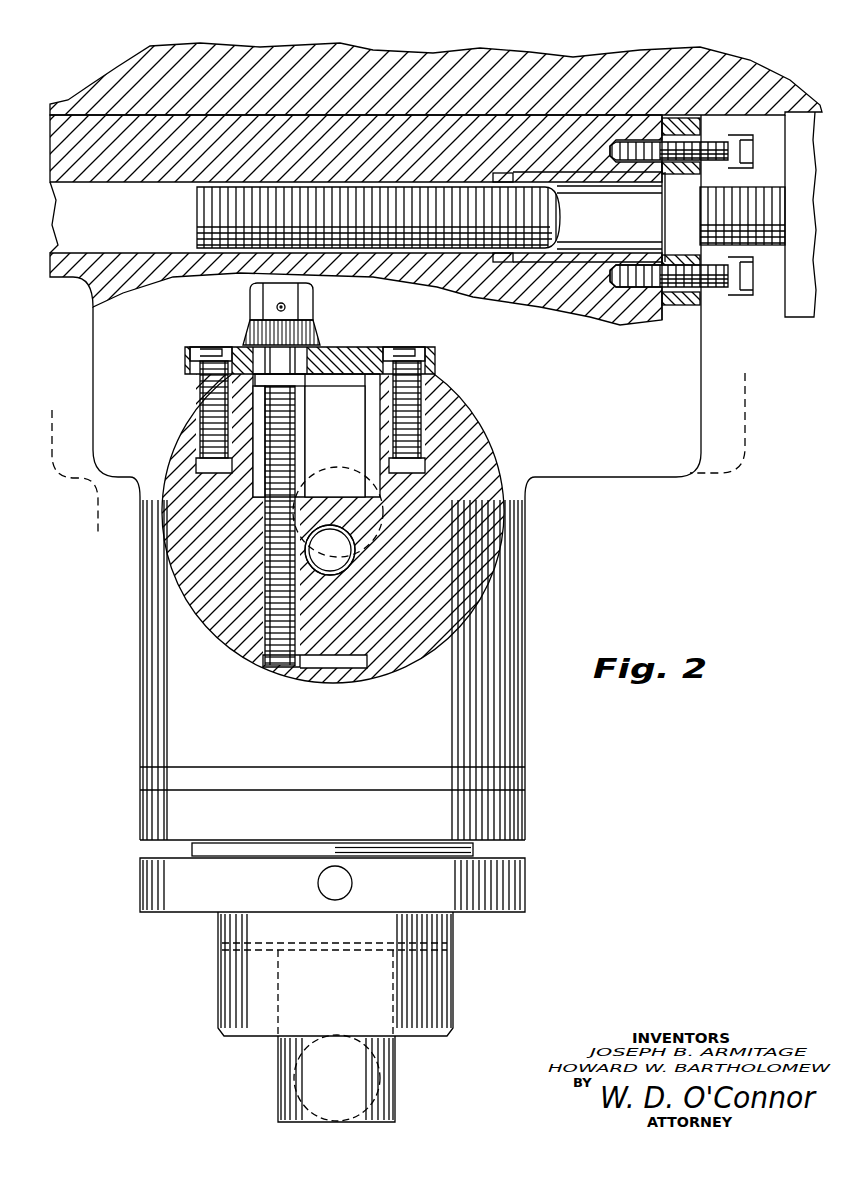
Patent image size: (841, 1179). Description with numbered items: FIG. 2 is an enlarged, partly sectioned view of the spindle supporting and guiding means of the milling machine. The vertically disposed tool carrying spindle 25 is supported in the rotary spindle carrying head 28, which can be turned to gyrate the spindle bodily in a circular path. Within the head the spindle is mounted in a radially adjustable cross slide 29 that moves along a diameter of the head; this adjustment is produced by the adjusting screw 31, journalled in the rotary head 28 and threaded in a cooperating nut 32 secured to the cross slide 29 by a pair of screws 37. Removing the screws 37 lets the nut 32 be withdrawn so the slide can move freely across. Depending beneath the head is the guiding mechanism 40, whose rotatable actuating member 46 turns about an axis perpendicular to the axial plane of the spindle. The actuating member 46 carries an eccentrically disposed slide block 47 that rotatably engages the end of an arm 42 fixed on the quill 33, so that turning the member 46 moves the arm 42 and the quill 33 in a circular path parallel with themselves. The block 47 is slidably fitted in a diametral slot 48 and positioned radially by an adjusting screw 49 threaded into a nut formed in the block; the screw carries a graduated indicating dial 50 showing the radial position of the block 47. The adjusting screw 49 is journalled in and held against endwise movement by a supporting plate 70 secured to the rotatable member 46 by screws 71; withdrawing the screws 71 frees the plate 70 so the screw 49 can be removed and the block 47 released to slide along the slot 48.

The tool carrying spindle 25 is at (305, 1086).
The rotary spindle carrying head 28 is at (464, 56).
The cross slide 29 is at (701, 374).
The adjusting screw 31 is at (197, 209).
The nut 32 is at (652, 215).
The quill 33 is at (248, 1003).
The screws 37 is at (747, 145).
The guiding mechanism 40 is at (537, 581).
The arm 42 is at (338, 533).
The rotatable actuating member 46 is at (462, 405).
The slide block 47 is at (336, 652).
The slot 48 is at (378, 446).
The adjusting screw 49 is at (291, 434).
The indicating dial 50 is at (333, 341).
The supporting plate 70 is at (310, 394).
The screws 71 is at (211, 346).